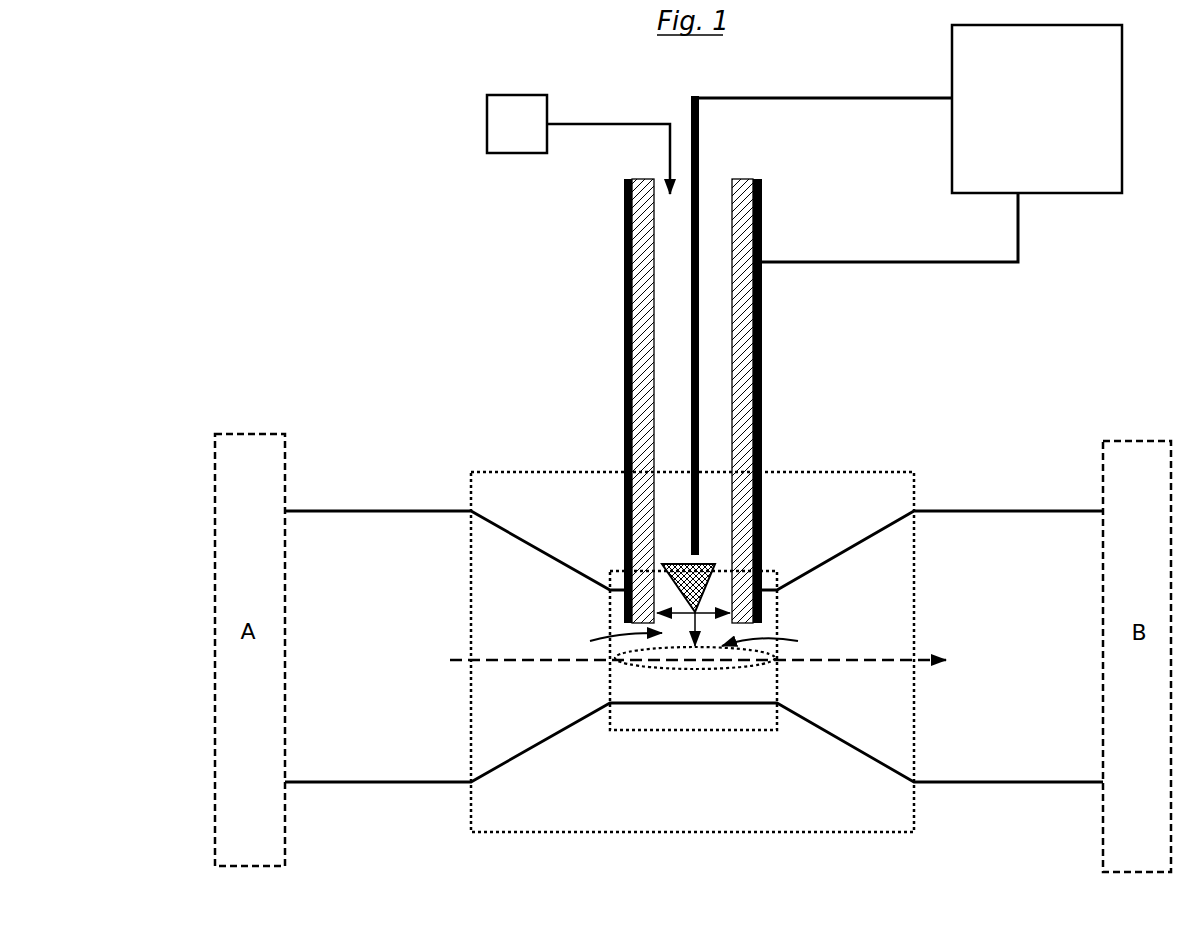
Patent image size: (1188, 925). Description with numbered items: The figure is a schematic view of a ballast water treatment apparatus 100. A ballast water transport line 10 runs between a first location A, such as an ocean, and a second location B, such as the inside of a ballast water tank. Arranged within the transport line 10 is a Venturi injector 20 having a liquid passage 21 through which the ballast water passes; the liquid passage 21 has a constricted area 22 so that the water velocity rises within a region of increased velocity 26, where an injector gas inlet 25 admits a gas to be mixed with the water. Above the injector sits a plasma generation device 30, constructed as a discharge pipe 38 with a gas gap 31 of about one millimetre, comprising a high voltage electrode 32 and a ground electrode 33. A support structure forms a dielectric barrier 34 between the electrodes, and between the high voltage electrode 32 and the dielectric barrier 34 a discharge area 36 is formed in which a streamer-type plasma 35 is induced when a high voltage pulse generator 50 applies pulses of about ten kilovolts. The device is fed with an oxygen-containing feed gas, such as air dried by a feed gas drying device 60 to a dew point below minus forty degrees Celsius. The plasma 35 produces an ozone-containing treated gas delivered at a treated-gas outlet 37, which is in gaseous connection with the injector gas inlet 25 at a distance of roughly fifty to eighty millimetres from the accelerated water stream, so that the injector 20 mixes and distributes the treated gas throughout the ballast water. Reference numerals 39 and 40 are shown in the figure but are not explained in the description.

The ballast water treatment apparatus 100 is at (340, 227).
The ballast water transport line 10 is at (366, 511).
The injector 20 is at (914, 795).
The liquid passage 21 is at (930, 660).
The constricted area 22 is at (747, 730).
The injector gas inlet 25 is at (775, 642).
The region of increased velocity 26 is at (718, 695).
The plasma generation device 30 is at (860, 330).
The gas gap 31 is at (665, 583).
The high voltage electrode 32 is at (692, 325).
The ground electrode 33 is at (762, 370).
The dielectric barrier 34 is at (742, 342).
The streamer-type plasma 35 is at (722, 576).
The discharge area 36 is at (677, 388).
The treated-gas outlet 37 is at (609, 637).
The discharge pipe 38 is at (606, 257).
The actuator stem 39 is at (713, 205).
The valve gap 40 is at (735, 625).
The high voltage pulse generator 50 is at (908, 143).
The feed gas drying device 60 is at (578, 144).